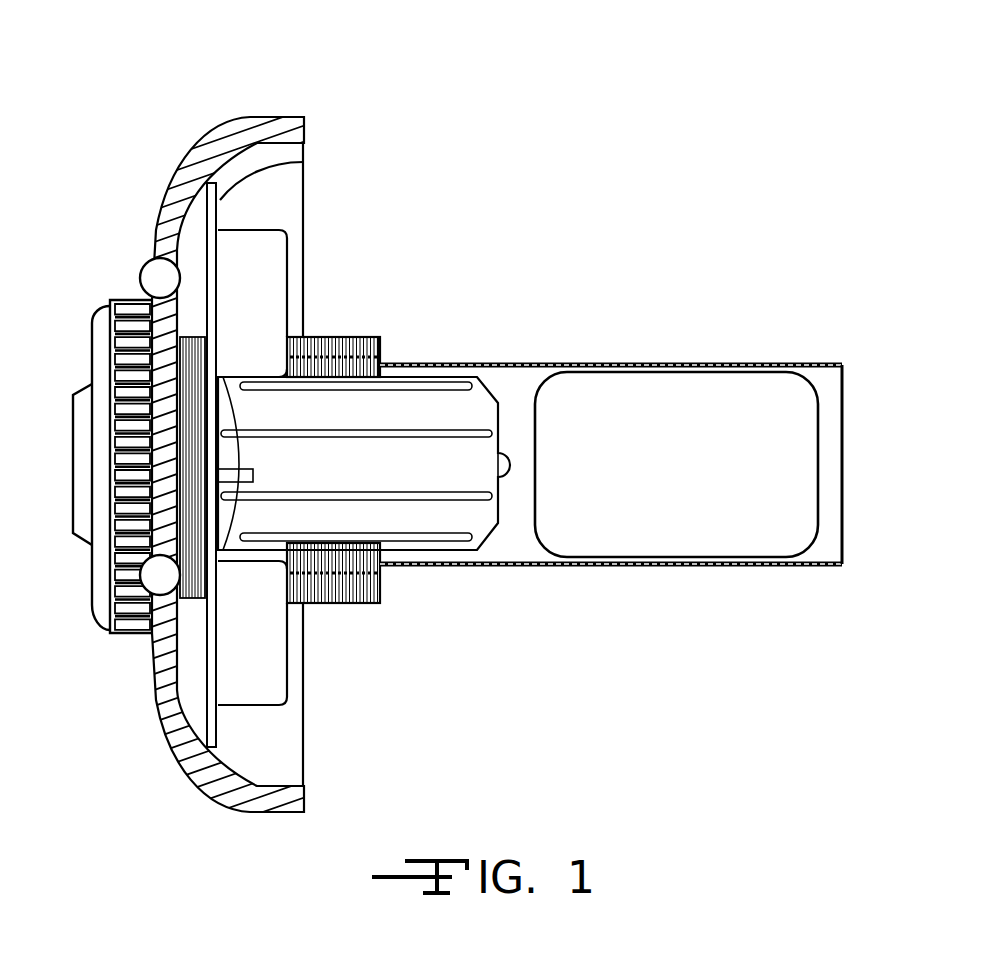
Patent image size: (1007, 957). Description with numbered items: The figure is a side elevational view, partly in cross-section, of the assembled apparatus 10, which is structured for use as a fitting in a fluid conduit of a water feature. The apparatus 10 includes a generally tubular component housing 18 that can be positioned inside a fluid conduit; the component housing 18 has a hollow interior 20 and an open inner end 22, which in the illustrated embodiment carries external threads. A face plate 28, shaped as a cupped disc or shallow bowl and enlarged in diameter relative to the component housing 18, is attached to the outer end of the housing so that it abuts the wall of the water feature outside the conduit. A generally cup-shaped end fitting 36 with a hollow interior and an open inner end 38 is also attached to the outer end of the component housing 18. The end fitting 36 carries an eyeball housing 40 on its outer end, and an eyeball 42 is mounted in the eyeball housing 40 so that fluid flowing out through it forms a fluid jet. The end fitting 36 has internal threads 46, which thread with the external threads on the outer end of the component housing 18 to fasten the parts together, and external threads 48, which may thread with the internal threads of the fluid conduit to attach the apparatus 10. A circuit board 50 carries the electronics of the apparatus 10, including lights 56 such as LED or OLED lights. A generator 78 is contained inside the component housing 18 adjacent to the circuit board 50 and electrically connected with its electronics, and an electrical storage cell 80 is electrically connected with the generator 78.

The assembled apparatus 10 is at (619, 138).
The component housing 18 is at (533, 365).
The hollow interior 20 is at (508, 533).
The open inner end 22 is at (841, 365).
The face plate 28 is at (265, 116).
The end fitting 36 is at (73, 393).
The open inner end 38 is at (378, 337).
The eyeball housing 40 is at (130, 633).
The eyeball 42 is at (73, 497).
The internal threads 46 is at (330, 337).
The external threads 48 is at (360, 603).
The circuit board 50 is at (303, 162).
The lights 56 is at (143, 272).
The generator 78 is at (430, 407).
The electrical storage cell 80 is at (652, 405).